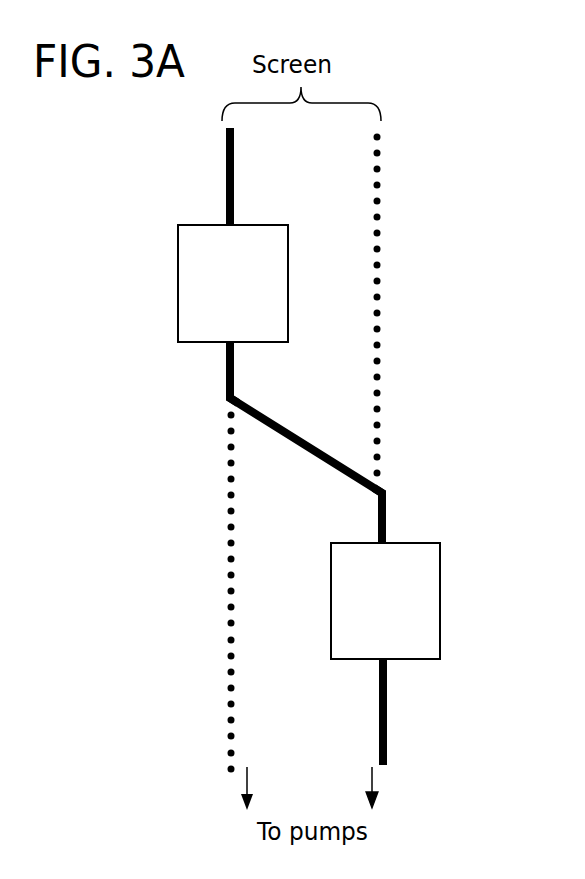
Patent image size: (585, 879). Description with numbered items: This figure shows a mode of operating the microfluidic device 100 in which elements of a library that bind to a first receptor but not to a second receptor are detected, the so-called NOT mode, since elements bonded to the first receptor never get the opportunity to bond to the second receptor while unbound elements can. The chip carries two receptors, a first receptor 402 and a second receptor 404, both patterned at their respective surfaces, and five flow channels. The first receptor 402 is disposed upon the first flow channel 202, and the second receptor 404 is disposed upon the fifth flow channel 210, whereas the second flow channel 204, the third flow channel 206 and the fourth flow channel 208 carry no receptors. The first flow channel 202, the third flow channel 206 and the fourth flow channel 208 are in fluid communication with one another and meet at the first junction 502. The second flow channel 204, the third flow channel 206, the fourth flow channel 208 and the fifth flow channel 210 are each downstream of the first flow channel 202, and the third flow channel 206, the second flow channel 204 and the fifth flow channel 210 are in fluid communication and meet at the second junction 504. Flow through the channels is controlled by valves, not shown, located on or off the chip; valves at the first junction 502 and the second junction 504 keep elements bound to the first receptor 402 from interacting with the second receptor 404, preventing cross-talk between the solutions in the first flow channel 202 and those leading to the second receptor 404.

The microfluidic device 100 is at (413, 168).
The first flow channel 202 is at (226, 193).
The second flow channel 204 is at (380, 290).
The third flow channel 206 is at (240, 404).
The fourth flow channel 208 is at (228, 668).
The fifth flow channel 210 is at (388, 715).
The first receptor 402 is at (178, 312).
The second receptor 404 is at (410, 618).
The first junction 502 is at (227, 398).
The second junction 504 is at (385, 492).